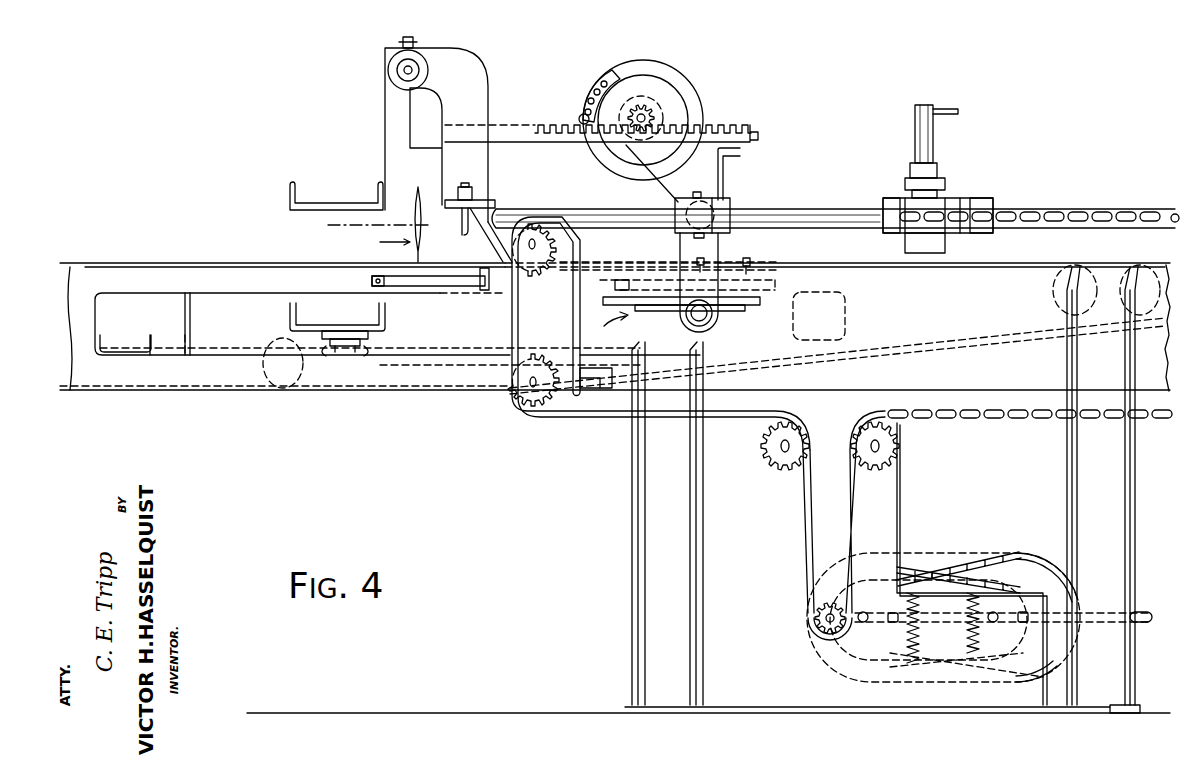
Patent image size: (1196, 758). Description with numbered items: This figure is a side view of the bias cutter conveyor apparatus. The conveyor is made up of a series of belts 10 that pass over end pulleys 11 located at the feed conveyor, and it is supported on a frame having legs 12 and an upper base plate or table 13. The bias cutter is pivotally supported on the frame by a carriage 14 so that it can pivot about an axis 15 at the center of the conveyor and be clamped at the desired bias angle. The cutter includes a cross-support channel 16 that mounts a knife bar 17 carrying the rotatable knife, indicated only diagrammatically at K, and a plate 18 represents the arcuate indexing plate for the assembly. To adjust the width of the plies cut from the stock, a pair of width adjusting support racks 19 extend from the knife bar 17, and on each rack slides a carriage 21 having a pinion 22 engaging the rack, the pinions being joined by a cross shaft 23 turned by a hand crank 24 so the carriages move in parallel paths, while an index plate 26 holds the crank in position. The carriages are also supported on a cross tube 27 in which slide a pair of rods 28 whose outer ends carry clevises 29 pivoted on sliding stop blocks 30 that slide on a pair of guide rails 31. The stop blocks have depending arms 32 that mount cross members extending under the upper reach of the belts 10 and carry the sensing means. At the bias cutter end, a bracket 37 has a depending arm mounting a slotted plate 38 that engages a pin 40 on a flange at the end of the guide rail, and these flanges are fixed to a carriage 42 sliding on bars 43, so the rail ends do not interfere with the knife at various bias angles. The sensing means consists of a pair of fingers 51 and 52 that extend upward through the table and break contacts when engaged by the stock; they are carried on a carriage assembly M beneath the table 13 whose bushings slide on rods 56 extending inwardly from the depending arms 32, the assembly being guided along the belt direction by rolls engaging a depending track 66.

The belts 10 is at (66, 263).
The end pulleys 11 is at (1053, 288).
The legs 12 is at (645, 546).
The table 13 is at (843, 268).
The carriage 14 is at (178, 335).
The axis 15 is at (322, 318).
The cross-support channel 16 is at (290, 200).
The knife bar 17 is at (388, 70).
The arcuate indexing plate 18 is at (228, 358).
The width adjusting support racks 19 is at (552, 125).
The carriage 21 is at (741, 160).
The pinion 22 is at (640, 106).
The cross shaft 23 is at (655, 118).
The hand crank 24 is at (632, 72).
The index plate 26 is at (590, 88).
The cross tube 27 is at (675, 197).
The rods 28 is at (730, 205).
The clevises 29 is at (680, 238).
The sliding stop blocks 30 is at (731, 212).
The guide rails 31 is at (1172, 210).
The depending arms 32 is at (685, 315).
The bracket 37 is at (458, 62).
The slotted plate 38 is at (478, 200).
The pins 40 is at (464, 228).
The carriage 42 is at (485, 290).
The bars 43 is at (430, 286).
The finger 51 is at (706, 264).
The stop control finger 52 is at (751, 264).
The rods 56 is at (705, 318).
The depending track 66 is at (845, 303).